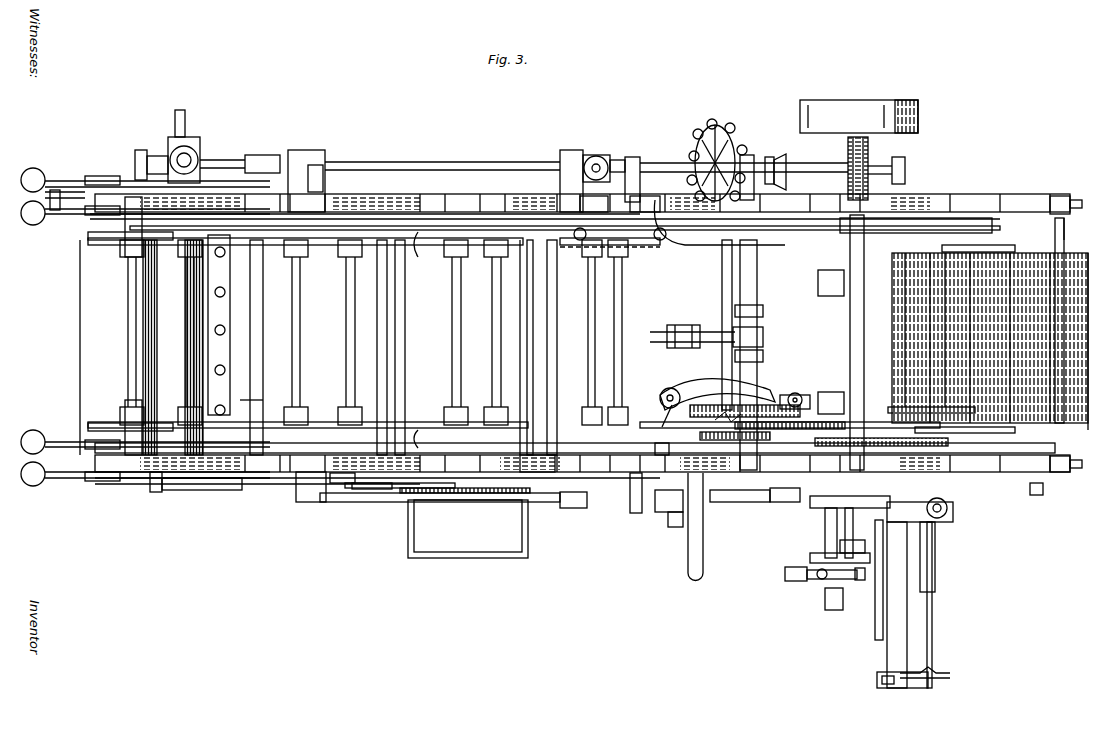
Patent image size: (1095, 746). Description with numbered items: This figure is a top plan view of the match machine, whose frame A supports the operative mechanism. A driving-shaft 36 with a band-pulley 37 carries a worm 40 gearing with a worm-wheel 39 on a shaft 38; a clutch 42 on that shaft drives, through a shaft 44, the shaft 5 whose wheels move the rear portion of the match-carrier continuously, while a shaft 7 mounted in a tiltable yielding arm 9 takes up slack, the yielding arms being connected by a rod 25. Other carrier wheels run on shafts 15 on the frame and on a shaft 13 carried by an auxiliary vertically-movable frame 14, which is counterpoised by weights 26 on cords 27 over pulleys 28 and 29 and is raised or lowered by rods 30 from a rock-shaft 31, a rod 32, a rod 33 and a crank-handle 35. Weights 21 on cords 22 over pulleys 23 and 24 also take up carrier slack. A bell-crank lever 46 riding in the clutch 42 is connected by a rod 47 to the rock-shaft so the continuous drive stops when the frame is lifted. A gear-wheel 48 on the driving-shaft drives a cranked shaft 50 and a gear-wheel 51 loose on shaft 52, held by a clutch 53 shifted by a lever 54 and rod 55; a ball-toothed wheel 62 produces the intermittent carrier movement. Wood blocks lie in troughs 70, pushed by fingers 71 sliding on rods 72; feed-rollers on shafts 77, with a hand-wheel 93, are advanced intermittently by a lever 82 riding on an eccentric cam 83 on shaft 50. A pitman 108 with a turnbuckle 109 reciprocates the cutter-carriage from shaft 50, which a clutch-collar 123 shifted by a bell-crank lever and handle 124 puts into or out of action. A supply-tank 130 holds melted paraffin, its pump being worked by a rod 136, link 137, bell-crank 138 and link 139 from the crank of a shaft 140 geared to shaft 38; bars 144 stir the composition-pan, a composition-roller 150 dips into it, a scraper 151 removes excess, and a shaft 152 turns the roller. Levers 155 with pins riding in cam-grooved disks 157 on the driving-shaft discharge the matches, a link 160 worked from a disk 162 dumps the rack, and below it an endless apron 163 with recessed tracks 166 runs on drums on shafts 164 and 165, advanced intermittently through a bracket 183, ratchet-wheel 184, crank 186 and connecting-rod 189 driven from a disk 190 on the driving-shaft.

The frame A is at (412, 208).
The shaft 5 is at (808, 282).
The shaft 7 is at (975, 252).
The tiltable yielding arm 9 is at (950, 210).
The shaft 13 is at (242, 347).
The auxiliary vertically-movable frame 14 is at (420, 340).
The shafts 15 is at (130, 324).
The weights 21 is at (24, 216).
The cords 22 is at (72, 216).
The pulleys 23 is at (52, 222).
The pulleys 24 is at (562, 446).
The rod 25 is at (662, 450).
The weights 26 is at (38, 170).
The cords 27 is at (100, 181).
The pulleys 28 is at (226, 165).
The pulleys 29 is at (92, 176).
The rods 30 is at (324, 180).
The rock-shaft 31 is at (556, 505).
The rod 32 is at (252, 340).
The rod 33 is at (674, 528).
The crank-handle 35 is at (875, 596).
The driving-shaft 36 is at (890, 152).
The band-pulley 37 is at (920, 114).
The shaft 38 is at (485, 166).
The worm-wheel 39 is at (868, 152).
The worm 40 is at (848, 165).
The clutch 42 is at (656, 176).
The shaft 44 is at (682, 168).
The bell-crank lever 46 is at (676, 232).
The rod 47 is at (580, 336).
The gear-wheel 48 is at (915, 435).
The cranked shaft 50 is at (766, 290).
The gear-wheel 51 is at (745, 422).
The shaft 52 is at (726, 296).
The clutch 53 is at (714, 398).
The lever 54 is at (798, 394).
The rod 55 is at (810, 424).
The ball-toothed wheel 62 is at (730, 140).
The troughs 70 is at (904, 690).
The finger 71 is at (946, 668).
The rods 72 is at (887, 656).
The shafts 77 is at (938, 520).
The medially-pivoted lever 82 is at (740, 504).
The eccentric cam 83 is at (790, 504).
The hand-wheel 93 is at (1036, 495).
The pitman 108 is at (660, 332).
The turnbuckle 109 is at (680, 346).
The clutch-collar 123 is at (798, 392).
The bell-crank lever and handle 124 is at (700, 538).
The supply-tank 130 is at (500, 558).
The rod 136 is at (350, 484).
The link 137 is at (362, 490).
The bell-crank 138 is at (378, 490).
The link 139 is at (468, 502).
The shaft 140 is at (524, 392).
The horizontally-disposed bars 144 is at (92, 240).
The composition-roller 150 is at (173, 347).
The scraper 151 is at (236, 368).
The shaft 152 is at (192, 145).
The levers 155 is at (950, 300).
The disks 157 is at (1004, 292).
The link 160 is at (954, 510).
The disk 162 is at (818, 510).
The endless apron 163 is at (1046, 258).
The shaft 164 is at (924, 236).
The shaft 165 is at (1060, 230).
The recessed tracks 166 is at (1078, 418).
The bracket 183 is at (830, 610).
The ratchet-wheel 184 is at (860, 580).
The crank 186 is at (810, 582).
The connecting-rod 189 is at (790, 582).
The disk 190 is at (810, 556).